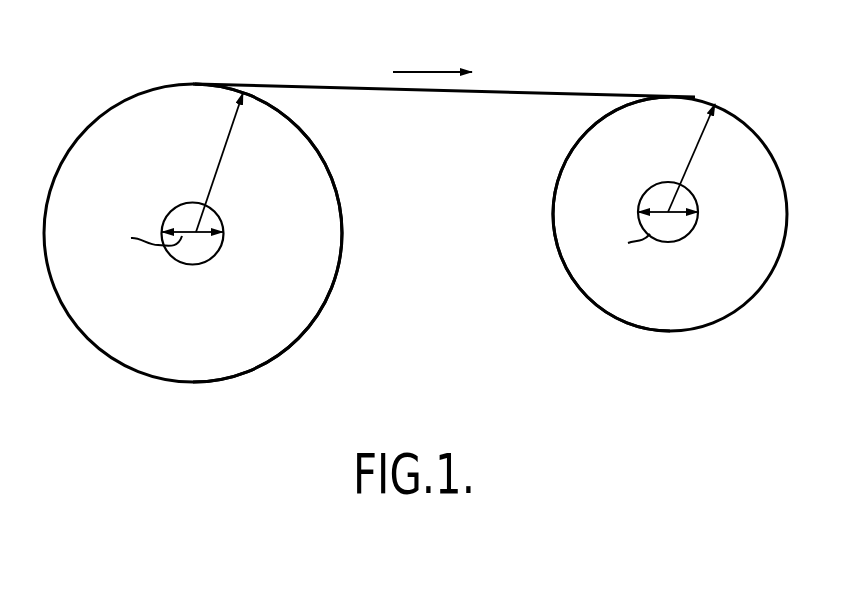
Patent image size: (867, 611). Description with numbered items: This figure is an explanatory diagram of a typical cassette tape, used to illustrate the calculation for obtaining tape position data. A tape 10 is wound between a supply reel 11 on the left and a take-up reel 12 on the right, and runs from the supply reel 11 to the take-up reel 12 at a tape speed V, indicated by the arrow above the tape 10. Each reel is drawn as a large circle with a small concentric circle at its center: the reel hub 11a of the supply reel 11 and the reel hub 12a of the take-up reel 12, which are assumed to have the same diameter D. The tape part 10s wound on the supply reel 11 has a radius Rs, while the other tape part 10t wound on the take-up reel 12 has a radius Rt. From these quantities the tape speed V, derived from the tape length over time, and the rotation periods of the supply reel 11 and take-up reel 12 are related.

The tape 10 is at (467, 91).
The tape part on the supply reel 10s is at (313, 232).
The tape part on the take-up reel 10t is at (565, 213).
The supply reel 11 is at (127, 95).
The reel hub 11a is at (207, 247).
The take-up reel 12 is at (713, 96).
The reel hub 12a is at (687, 228).